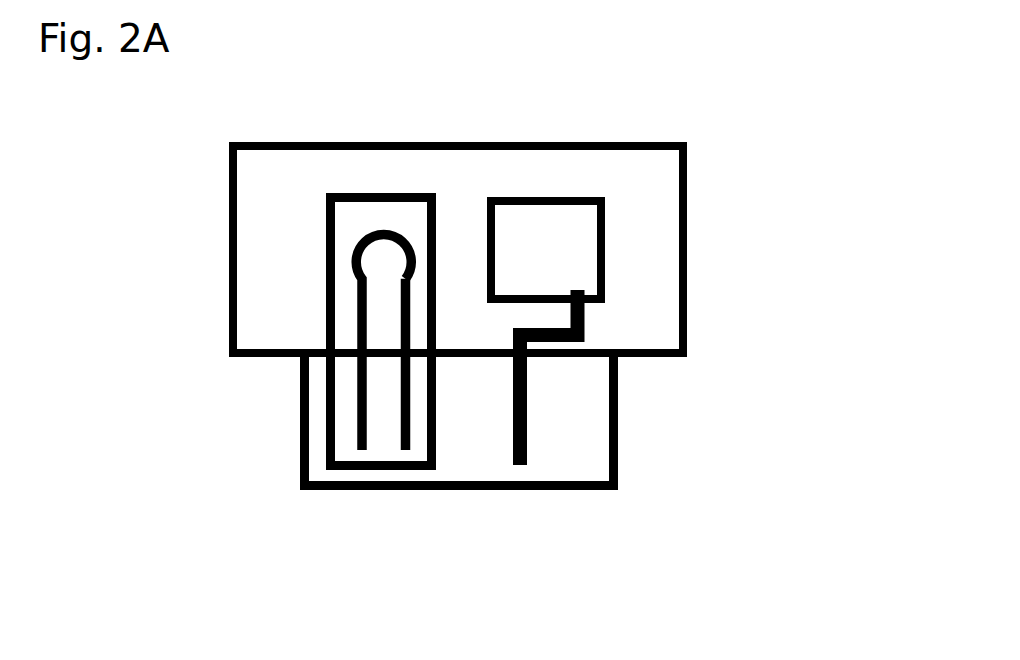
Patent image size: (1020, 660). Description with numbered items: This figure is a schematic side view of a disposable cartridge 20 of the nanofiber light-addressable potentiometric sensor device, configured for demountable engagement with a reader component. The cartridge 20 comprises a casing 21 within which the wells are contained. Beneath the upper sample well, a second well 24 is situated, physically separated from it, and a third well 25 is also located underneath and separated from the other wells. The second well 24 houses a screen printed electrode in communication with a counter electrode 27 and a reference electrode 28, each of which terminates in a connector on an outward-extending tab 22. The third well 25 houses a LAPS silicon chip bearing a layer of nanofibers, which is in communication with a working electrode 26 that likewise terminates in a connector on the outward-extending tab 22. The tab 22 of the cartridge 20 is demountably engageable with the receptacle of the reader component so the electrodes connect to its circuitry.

The disposable cartridge 20 is at (556, 108).
The casing 21 is at (688, 268).
The outward-extending tab 22 is at (569, 472).
The second well 24 is at (378, 219).
The third well 25 is at (603, 200).
The working electrode 26 is at (587, 317).
The counter electrode 27 is at (360, 387).
The reference electrode 28 is at (405, 448).